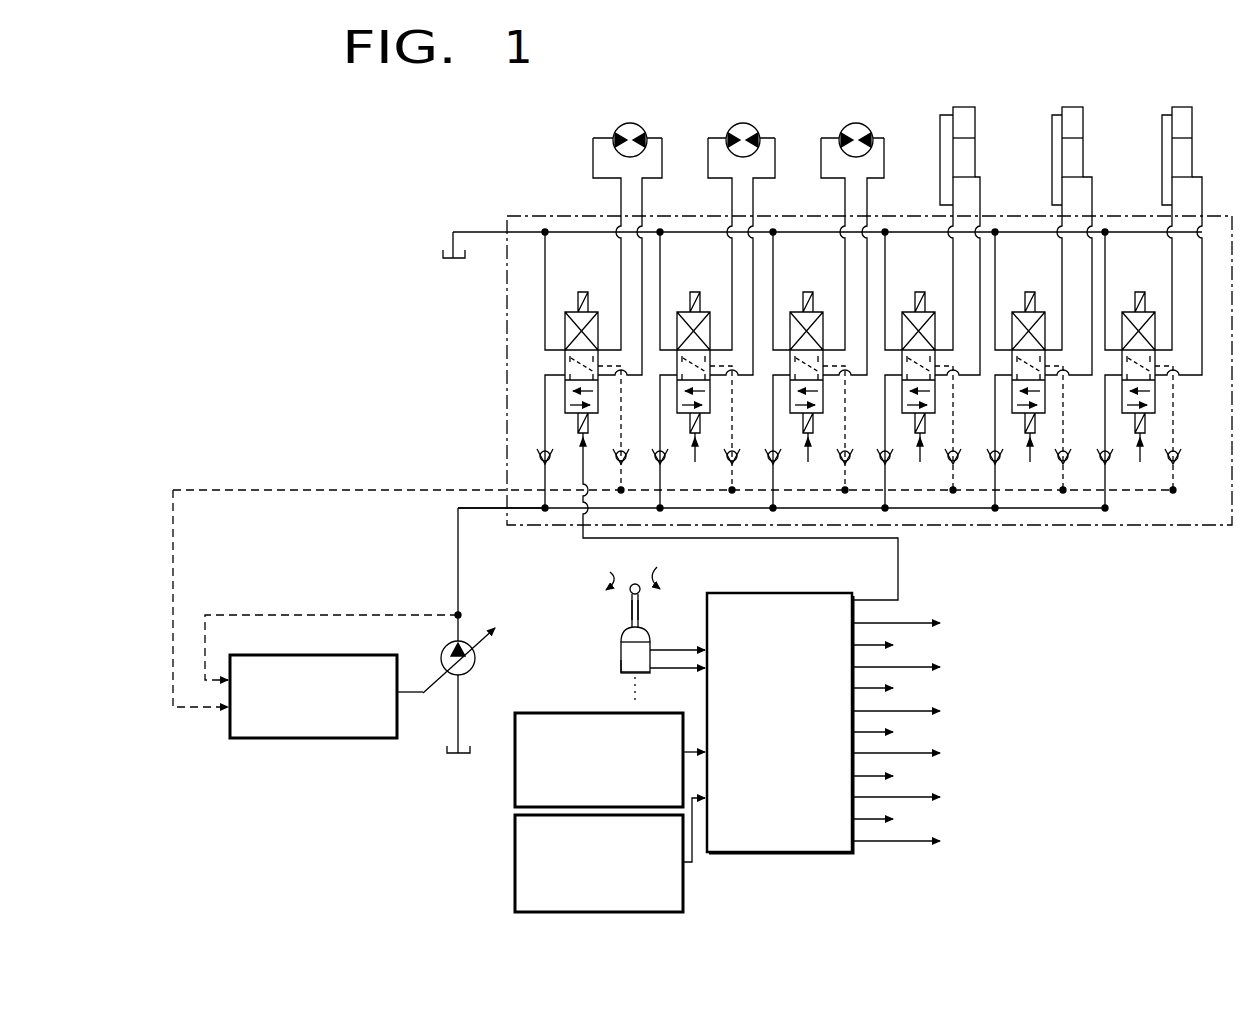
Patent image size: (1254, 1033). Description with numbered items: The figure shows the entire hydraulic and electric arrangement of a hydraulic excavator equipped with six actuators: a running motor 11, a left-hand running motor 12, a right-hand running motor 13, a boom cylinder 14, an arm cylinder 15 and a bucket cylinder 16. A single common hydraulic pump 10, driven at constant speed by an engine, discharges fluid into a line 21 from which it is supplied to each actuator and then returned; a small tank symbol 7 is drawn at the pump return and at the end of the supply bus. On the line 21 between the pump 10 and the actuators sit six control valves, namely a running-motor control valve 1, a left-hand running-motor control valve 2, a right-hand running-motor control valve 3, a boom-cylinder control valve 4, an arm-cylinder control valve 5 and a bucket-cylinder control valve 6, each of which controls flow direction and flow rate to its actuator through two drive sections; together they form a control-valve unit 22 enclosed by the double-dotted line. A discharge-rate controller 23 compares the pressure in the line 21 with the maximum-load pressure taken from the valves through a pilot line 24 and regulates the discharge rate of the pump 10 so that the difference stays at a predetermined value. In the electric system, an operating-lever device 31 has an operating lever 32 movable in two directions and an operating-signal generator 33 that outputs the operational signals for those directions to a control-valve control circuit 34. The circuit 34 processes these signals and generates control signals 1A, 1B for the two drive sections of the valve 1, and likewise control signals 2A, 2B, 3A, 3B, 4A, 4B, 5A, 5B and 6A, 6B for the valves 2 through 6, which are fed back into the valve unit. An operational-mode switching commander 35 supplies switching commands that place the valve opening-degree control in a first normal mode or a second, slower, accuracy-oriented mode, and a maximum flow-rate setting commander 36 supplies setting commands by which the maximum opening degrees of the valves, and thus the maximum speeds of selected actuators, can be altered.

The running-motor control valve 1 is at (598, 318).
The left-hand running-motor control valve 2 is at (710, 318).
The right-hand running-motor control valve 3 is at (823, 318).
The boom-cylinder control valve 4 is at (935, 318).
The arm-cylinder control valve 5 is at (1045, 318).
The bucket-cylinder control valve 6 is at (1155, 318).
The tank 7 is at (454, 259).
The hydraulic pump 10 is at (474, 660).
The running motor 11 is at (640, 125).
The left-hand running motor 12 is at (752, 125).
The right-hand running motor 13 is at (865, 125).
The boom cylinder 14 is at (975, 116).
The arm cylinder 15 is at (1083, 116).
The bucket cylinder 16 is at (1192, 118).
The line 21 is at (462, 567).
The control-valve unit 22 is at (1165, 527).
The discharge-rate controller 23 is at (290, 740).
The pilot line 24 is at (1023, 510).
The operating-lever device 31 is at (618, 648).
The operating lever 32 is at (630, 610).
The operating-signal generator 33 is at (620, 666).
The control-valve control circuit 34 is at (772, 593).
The operational-mode switching commander 35 is at (515, 775).
The maximum flow-rate setting commander 36 is at (515, 848).
The control signal 1A is at (760, 524).
The control signal 1B is at (583, 283).
The control signal 2A is at (697, 461).
The control signal 2B is at (695, 283).
The control signal 3A is at (810, 461).
The control signal 3B is at (808, 283).
The control signal 4A is at (922, 461).
The control signal 4B is at (920, 283).
The control signal 5A is at (1032, 461).
The control signal 5B is at (1030, 283).
The control signal 6A is at (1142, 461).
The control signal 6B is at (1140, 283).